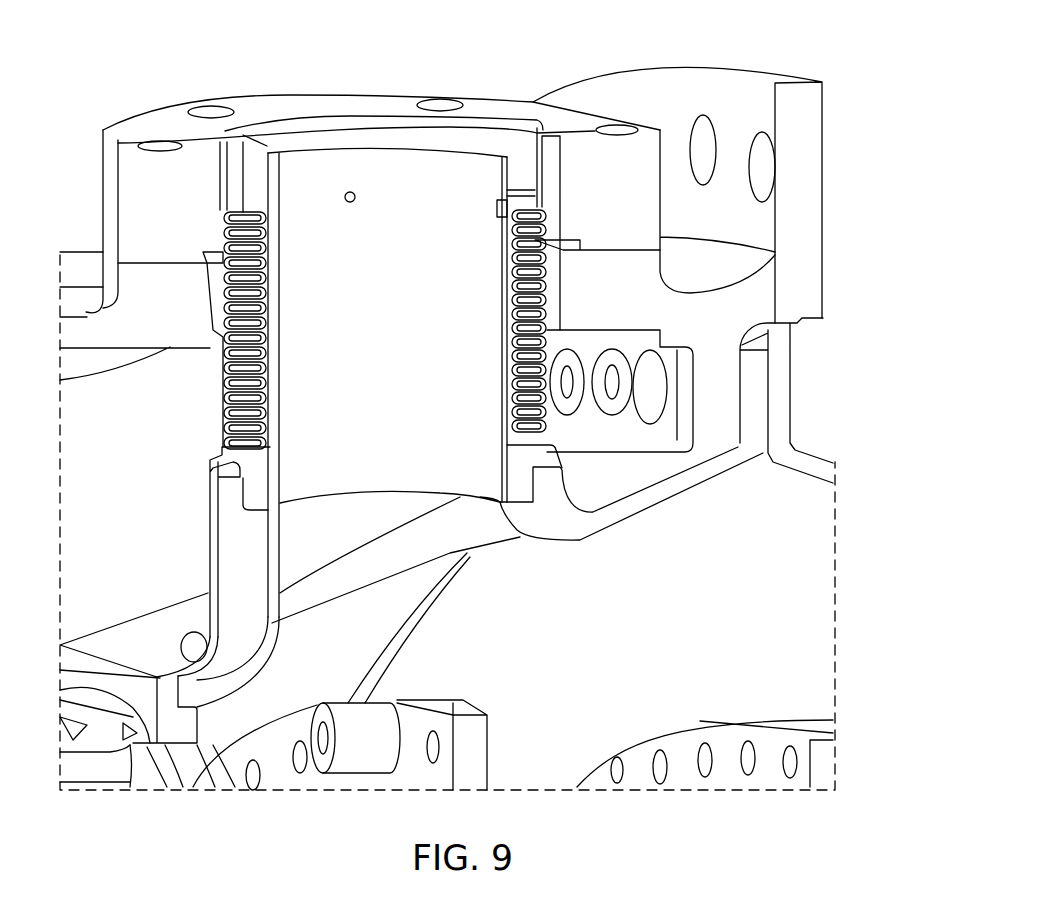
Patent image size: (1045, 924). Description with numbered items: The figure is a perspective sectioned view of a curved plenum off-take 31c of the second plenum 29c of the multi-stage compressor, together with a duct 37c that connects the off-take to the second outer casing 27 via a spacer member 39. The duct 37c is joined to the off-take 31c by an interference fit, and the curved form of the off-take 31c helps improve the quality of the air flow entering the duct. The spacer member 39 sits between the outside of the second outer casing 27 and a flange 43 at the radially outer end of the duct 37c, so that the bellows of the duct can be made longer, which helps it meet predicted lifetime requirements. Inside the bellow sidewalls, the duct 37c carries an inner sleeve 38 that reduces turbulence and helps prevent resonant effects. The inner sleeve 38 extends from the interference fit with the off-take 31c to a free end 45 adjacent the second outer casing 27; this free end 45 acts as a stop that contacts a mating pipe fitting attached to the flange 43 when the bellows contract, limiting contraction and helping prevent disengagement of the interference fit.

The second outer casing 27 is at (785, 82).
The second plenum 29c is at (733, 513).
The curved plenum off-take 31c is at (520, 533).
The duct 37c is at (547, 302).
The inner sleeve 38 is at (500, 405).
The spacer member 39 is at (662, 210).
The flange 43 is at (133, 128).
The free end 45 is at (283, 160).